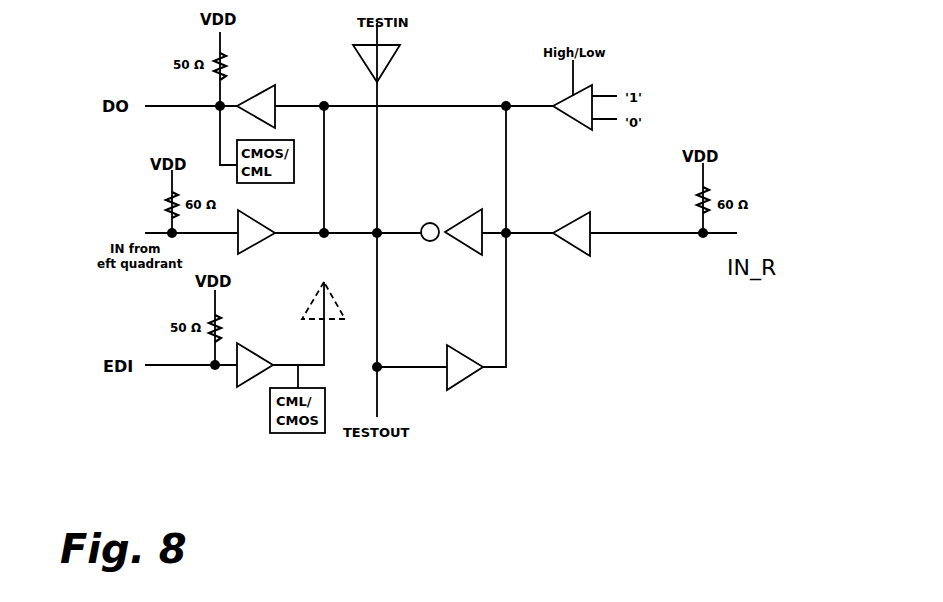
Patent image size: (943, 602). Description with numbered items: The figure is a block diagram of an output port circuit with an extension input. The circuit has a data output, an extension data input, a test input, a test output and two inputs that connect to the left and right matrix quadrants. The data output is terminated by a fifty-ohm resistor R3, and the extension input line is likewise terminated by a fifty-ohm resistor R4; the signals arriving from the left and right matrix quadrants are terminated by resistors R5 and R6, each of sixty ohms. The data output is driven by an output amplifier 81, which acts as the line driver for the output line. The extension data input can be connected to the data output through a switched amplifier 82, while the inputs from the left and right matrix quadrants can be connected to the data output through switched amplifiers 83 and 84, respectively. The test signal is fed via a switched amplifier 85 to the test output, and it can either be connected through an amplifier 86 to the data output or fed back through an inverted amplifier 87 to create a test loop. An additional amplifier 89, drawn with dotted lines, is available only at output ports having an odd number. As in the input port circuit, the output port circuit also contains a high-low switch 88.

The output amplifier 81 is at (275, 85).
The switched amplifier 82 is at (245, 372).
The switched amplifier 83 is at (247, 240).
The switched amplifier 84 is at (583, 218).
The switched amplifier 85 is at (387, 55).
The amplifier 86 is at (453, 380).
The inverted amplifier 87 is at (453, 242).
The high-low switch 88 is at (583, 93).
The additional amplifier 89 is at (327, 313).
The resistor R3 is at (220, 56).
The resistor R4 is at (230, 299).
The resistor R5 is at (708, 187).
The resistor R6 is at (182, 175).